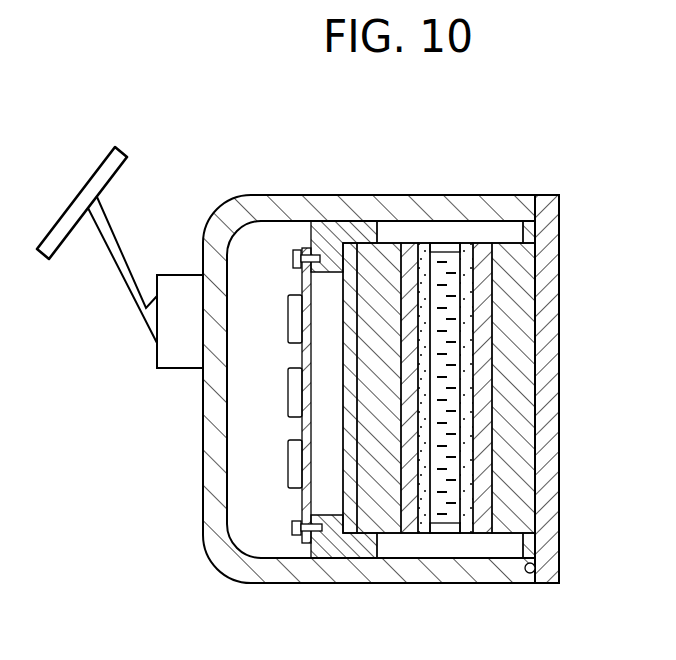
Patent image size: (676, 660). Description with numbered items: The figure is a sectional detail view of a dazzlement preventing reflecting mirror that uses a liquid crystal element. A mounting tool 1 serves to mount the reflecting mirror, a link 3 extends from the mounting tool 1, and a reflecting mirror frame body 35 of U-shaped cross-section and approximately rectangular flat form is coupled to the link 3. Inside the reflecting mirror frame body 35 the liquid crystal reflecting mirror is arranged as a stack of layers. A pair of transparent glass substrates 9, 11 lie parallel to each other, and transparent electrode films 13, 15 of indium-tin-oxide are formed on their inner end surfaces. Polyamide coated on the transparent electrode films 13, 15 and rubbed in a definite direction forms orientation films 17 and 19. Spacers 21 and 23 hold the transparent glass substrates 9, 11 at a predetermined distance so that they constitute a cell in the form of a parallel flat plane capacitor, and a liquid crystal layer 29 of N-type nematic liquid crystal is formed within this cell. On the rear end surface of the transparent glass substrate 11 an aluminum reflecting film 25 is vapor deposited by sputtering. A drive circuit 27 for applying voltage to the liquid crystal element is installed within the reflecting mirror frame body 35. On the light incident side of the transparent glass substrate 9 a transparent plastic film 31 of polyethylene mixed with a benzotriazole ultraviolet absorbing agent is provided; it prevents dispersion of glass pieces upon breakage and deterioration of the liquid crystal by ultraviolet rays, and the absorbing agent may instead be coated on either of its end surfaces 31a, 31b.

The mounting tool 1 is at (126, 149).
The link 3 is at (128, 262).
The transparent glass substrate 9 is at (510, 523).
The transparent glass substrate 11 is at (370, 520).
The transparent electrode film 13 is at (480, 525).
The transparent electrode film 15 is at (413, 527).
The orientation film 17 is at (468, 250).
The orientation film 19 is at (425, 250).
The spacer 21 is at (447, 525).
The spacer 23 is at (443, 250).
The reflecting film 25 is at (345, 232).
The drive circuit 27 is at (302, 497).
The liquid crystal layer 29 is at (452, 306).
The transparent plastic film 31 is at (547, 195).
The end surface of transparent plastic film 31a is at (559, 520).
The end surface of transparent plastic film 31b is at (532, 574).
The reflecting mirror frame body 35 is at (264, 195).